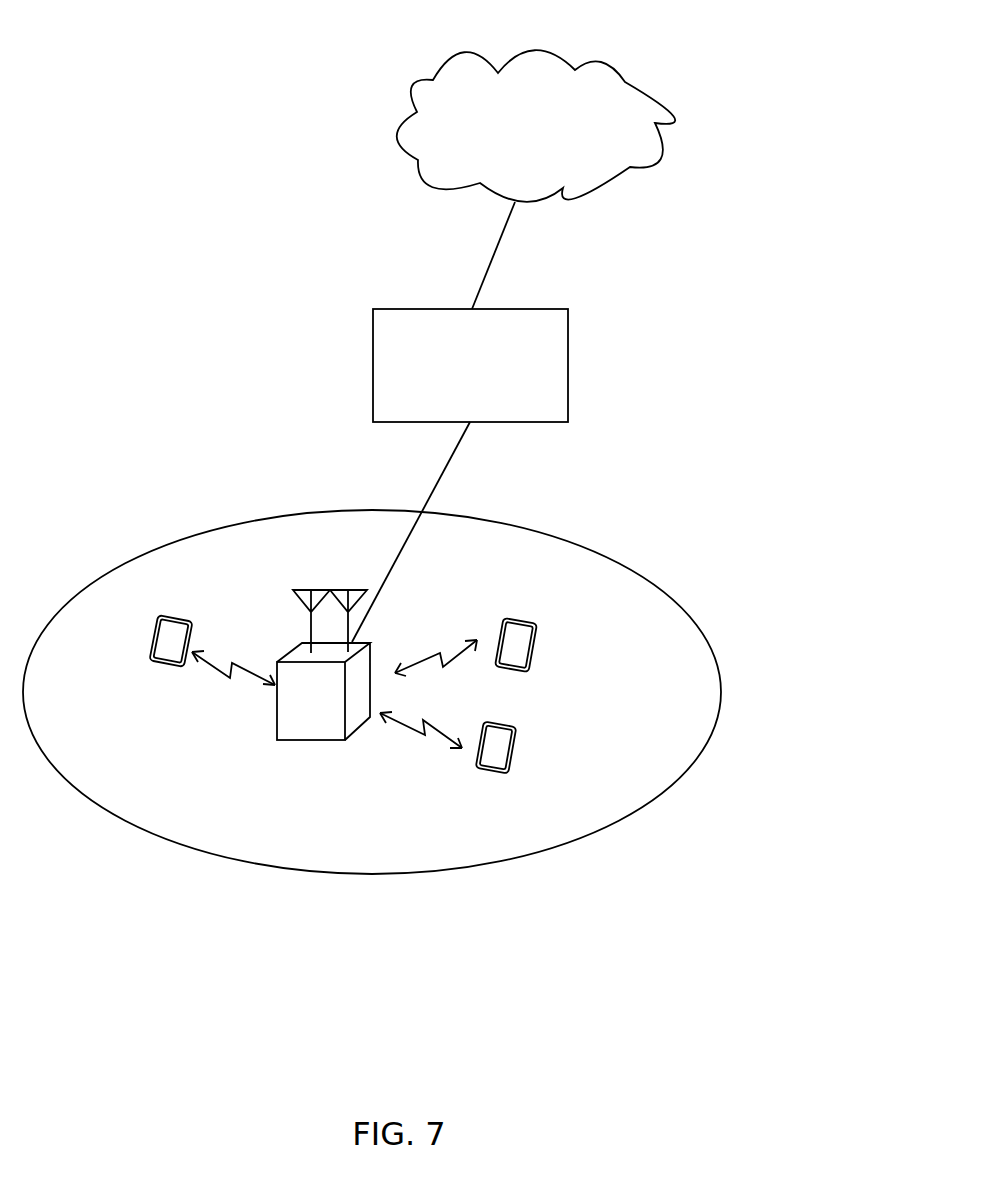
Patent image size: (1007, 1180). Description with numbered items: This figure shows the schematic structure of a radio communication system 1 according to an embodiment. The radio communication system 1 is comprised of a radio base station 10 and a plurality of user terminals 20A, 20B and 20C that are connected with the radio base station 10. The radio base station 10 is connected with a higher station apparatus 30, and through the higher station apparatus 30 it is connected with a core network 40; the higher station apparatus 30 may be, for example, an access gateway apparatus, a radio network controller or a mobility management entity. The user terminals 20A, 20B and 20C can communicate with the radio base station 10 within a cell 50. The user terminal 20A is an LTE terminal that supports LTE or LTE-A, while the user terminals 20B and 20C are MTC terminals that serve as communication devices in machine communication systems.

The radio communication system 1 is at (123, 182).
The radio base station 10 is at (302, 728).
The user terminal 20A is at (522, 653).
The user terminal 20B is at (493, 758).
The user terminal 20C is at (168, 653).
The higher station apparatus 30 is at (534, 309).
The core network 40 is at (618, 70).
The cell 50 is at (563, 540).